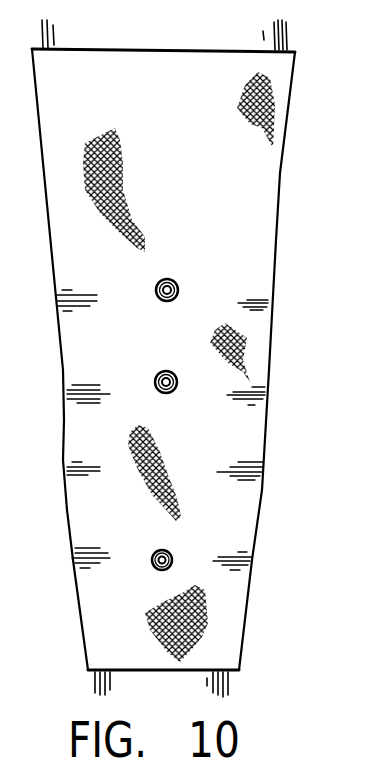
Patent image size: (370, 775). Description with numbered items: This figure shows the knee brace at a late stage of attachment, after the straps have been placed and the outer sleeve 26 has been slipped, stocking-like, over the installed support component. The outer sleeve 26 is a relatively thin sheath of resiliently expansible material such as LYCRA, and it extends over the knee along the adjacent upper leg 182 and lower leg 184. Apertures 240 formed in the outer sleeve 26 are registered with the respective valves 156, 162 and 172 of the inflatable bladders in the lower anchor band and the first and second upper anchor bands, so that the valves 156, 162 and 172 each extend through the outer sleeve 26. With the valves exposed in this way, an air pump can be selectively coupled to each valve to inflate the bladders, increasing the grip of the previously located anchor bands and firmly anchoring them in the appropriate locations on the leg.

The outer sleeve 26 is at (258, 190).
The upper leg 182 is at (283, 45).
The lower leg 184 is at (226, 686).
The valve 162 is at (188, 265).
The valve 172 is at (171, 371).
The valve 156 is at (166, 550).
The apertures 240 is at (176, 299).